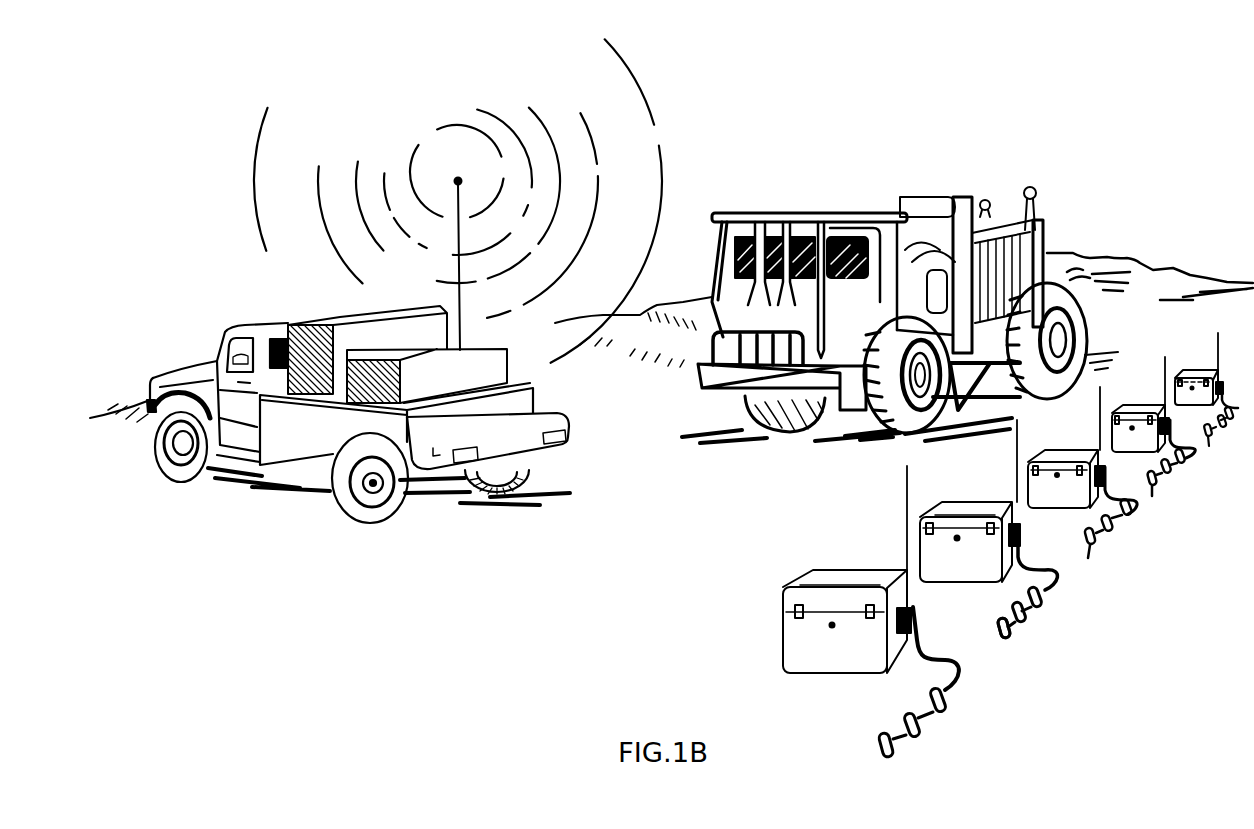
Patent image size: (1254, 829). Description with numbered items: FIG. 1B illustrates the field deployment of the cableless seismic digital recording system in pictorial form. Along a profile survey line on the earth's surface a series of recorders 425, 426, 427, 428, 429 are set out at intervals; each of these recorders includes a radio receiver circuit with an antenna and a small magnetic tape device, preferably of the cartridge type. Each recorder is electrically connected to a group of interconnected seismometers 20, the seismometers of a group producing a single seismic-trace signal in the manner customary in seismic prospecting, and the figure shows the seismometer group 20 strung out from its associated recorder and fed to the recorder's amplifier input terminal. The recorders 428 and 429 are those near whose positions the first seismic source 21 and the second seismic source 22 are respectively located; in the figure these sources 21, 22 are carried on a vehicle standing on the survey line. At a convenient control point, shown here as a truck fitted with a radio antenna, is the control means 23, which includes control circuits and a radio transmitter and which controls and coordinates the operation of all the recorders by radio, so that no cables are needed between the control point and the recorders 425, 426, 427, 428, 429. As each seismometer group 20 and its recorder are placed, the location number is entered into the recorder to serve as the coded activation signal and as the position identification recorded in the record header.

The seismometer group 20 is at (1008, 642).
The first seismic source 21 is at (892, 251).
The second seismic source 22 is at (772, 230).
The control means 23 is at (385, 357).
The recorder 425 is at (835, 582).
The recorder 426 is at (963, 507).
The recorder 427 is at (1057, 452).
The recorder 428 is at (1130, 412).
The recorder 429 is at (1188, 373).